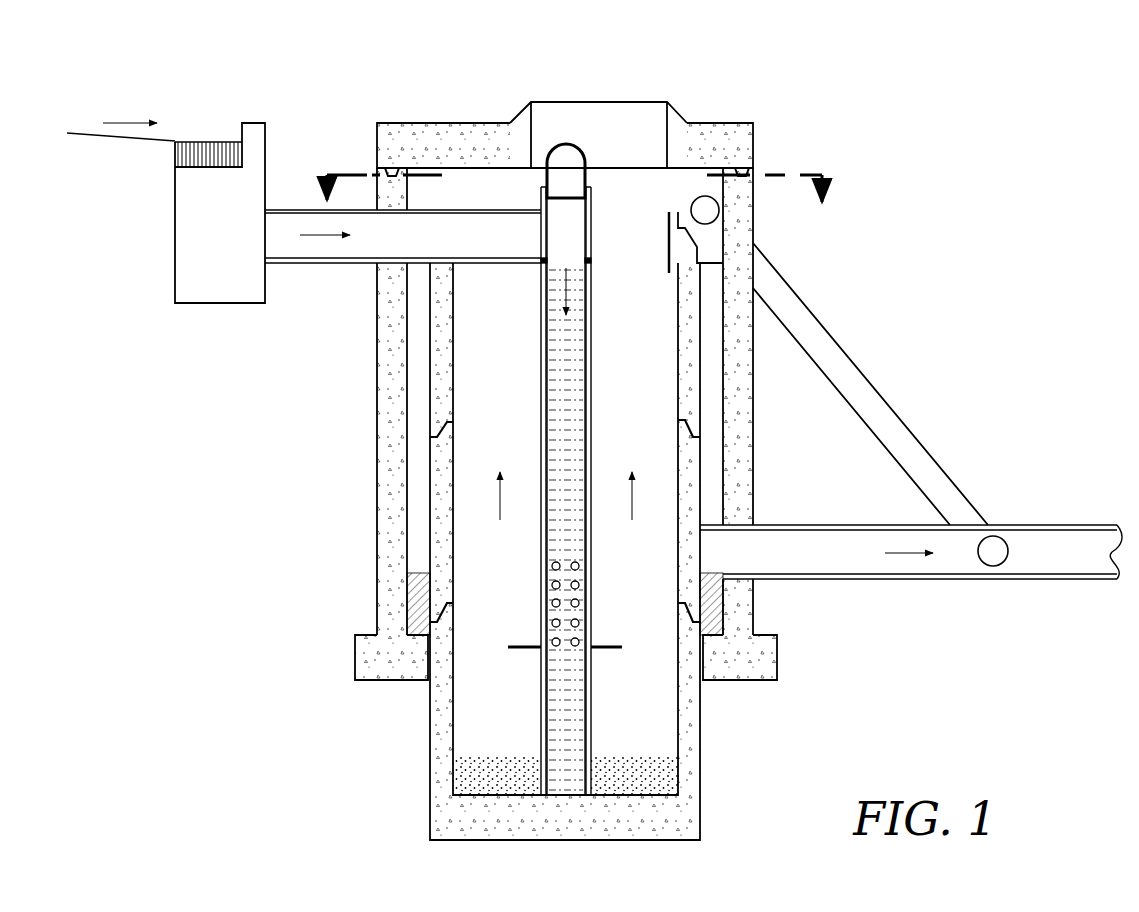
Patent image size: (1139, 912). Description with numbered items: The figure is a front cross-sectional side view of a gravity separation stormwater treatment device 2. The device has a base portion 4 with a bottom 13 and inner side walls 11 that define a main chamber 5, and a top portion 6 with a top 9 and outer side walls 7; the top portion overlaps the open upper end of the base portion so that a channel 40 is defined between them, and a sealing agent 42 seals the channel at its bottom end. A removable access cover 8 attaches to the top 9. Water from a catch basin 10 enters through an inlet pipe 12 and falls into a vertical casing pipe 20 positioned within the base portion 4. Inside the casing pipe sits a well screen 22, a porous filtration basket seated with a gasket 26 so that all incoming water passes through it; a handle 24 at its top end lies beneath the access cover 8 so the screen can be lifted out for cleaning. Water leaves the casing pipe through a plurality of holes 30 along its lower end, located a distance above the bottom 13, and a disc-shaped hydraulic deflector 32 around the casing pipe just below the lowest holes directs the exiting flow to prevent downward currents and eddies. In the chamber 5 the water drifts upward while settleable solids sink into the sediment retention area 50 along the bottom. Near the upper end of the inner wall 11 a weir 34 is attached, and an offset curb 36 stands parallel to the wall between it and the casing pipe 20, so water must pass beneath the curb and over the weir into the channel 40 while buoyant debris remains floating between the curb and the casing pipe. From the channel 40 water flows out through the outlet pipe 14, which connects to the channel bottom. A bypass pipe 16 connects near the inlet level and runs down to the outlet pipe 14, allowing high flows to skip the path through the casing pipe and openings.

The gravity separation stormwater treatment device 2 is at (215, 40).
The base portion 4 is at (689, 469).
The main chamber 5 is at (480, 682).
The top portion 6 is at (388, 531).
The outer wall 7 is at (390, 470).
The removable access cover 8 is at (548, 108).
The top 9 is at (415, 142).
The catch basin 10 is at (197, 222).
The inner wall 11 is at (687, 743).
The inlet pipe 12 is at (353, 247).
The bottom 13 is at (460, 818).
The outlet pipe 14 is at (1052, 558).
The bypass pipe 16 is at (915, 457).
The casing pipe 20 is at (540, 397).
The well screen 22 is at (575, 410).
The handle 24 is at (565, 143).
The gasket 26 is at (545, 260).
The holes 30 is at (550, 603).
The hydraulic deflector 32 is at (610, 648).
The weir 34 is at (678, 212).
The offset curb 36 is at (670, 210).
The channel 40 is at (712, 553).
The sealing agent 42 is at (713, 605).
The sediment retention area 50 is at (625, 769).